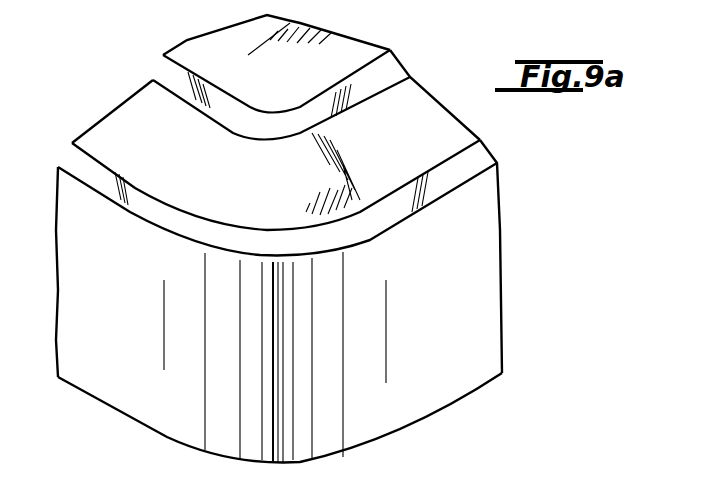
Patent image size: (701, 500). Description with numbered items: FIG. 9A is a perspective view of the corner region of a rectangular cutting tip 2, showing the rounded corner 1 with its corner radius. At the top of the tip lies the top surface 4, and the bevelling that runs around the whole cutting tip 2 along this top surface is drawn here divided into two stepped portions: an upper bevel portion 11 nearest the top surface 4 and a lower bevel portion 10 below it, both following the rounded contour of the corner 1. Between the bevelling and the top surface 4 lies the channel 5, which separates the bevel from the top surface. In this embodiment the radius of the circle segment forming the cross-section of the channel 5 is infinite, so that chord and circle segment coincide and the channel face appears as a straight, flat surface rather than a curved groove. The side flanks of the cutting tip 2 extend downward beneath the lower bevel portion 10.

The corner 1 is at (365, 242).
The cutting tip 2 is at (503, 268).
The top surface 4 is at (337, 55).
The channel 5 is at (415, 117).
The lower bevel portion 10 is at (478, 160).
The upper bevel portion 11 is at (388, 70).